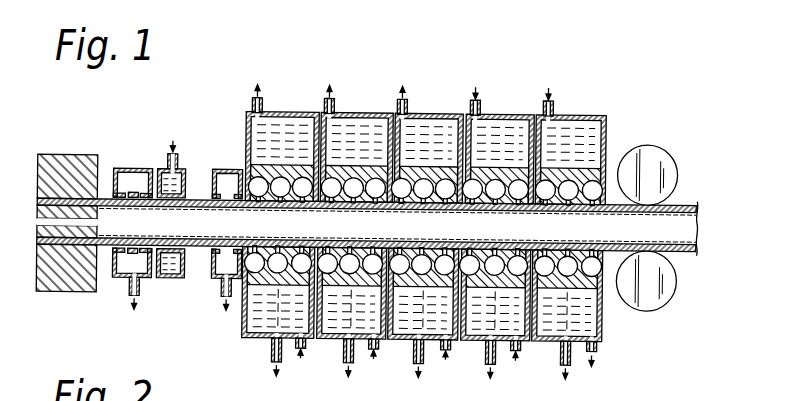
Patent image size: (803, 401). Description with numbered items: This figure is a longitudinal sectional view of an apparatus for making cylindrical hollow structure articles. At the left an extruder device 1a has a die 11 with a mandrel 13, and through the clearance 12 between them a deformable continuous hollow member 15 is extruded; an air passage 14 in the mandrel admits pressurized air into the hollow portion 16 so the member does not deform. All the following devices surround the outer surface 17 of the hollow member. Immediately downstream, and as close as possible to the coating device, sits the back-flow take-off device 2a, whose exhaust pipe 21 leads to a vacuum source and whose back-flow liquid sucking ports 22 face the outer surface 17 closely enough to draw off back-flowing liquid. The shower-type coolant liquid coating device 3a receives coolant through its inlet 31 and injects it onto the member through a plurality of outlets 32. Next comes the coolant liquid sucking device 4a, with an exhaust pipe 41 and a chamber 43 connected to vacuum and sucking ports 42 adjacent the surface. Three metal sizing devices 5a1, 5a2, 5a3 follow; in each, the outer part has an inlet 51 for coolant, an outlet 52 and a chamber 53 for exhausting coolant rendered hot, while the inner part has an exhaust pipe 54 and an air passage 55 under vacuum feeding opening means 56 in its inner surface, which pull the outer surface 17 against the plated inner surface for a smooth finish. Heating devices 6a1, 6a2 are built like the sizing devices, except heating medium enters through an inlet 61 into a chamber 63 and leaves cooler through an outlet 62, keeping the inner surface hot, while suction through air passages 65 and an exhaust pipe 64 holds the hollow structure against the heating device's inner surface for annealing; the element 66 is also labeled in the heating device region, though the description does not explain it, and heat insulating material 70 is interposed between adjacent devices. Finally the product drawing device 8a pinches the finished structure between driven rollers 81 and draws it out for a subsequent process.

The extruder device 1a is at (91, 212).
The die 11 is at (97, 161).
The clearance 12 is at (102, 178).
The mandrel 13 is at (99, 216).
The air passage 14 is at (97, 296).
The back-flow take-off device 2a is at (144, 222).
The exhaust pipe 21 is at (143, 302).
The back-flow liquid sucking ports 22 is at (142, 252).
The coolant liquid coating device 3a is at (188, 171).
The inlet 31 is at (177, 158).
The outlets 32 is at (172, 251).
The coolant liquid sucking device 4a is at (234, 236).
The exhaust pipe 41 is at (222, 296).
The sucking ports 42 is at (230, 276).
The chamber 43 is at (234, 283).
The deformable continuous hollow member 15 is at (205, 249).
The hollow portion 16 is at (430, 241).
The outer surface 17 is at (199, 198).
The sizing device 5a1 is at (298, 219).
The sizing device 5a2 is at (362, 84).
The sizing device 5a3 is at (437, 84).
The heating device 6a1 is at (501, 221).
The heating device 6a2 is at (576, 93).
The inlet 51 is at (305, 351).
The outlet 52 is at (258, 99).
The chamber 53 is at (283, 141).
The exhaust pipe 54 is at (285, 368).
The air passage 55 is at (300, 256).
The opening means 56 is at (279, 256).
The inlet 61 is at (475, 103).
The outlet 62 is at (520, 349).
The chamber 63 is at (500, 143).
The exhaust pipe 64 is at (497, 368).
The air passages 65 is at (494, 258).
The roller 66 is at (494, 196).
The heat insulating material 70 is at (328, 99).
The product drawing device 8a is at (662, 181).
The rollers 81 is at (661, 157).